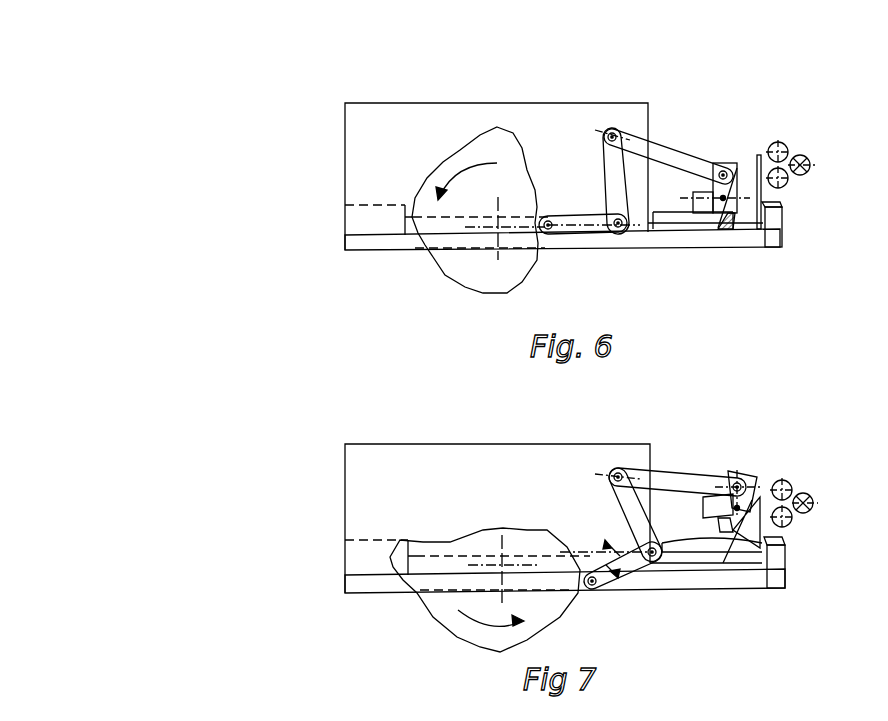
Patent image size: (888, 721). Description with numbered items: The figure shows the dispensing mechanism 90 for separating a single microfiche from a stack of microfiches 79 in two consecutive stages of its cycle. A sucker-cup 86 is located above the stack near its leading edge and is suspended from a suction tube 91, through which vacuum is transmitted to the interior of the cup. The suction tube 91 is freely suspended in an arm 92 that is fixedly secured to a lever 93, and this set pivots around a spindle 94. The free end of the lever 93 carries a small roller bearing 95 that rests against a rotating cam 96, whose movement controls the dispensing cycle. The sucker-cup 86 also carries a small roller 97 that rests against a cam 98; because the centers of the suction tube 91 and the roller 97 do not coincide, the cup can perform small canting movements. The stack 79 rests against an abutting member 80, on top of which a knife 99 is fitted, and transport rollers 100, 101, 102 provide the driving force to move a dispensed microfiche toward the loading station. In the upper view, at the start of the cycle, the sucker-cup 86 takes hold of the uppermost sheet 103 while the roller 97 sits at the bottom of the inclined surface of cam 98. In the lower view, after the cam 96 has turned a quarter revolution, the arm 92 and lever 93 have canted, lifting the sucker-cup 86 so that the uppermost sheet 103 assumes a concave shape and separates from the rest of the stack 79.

In FIG. 6, the stack of microfiches 79 is at (703, 233).
In FIG. 7, the stack of microfiches 79 is at (688, 572).
In FIG. 6, the abutting member 80 is at (770, 220).
In FIG. 7, the abutting member 80 is at (780, 560).
In FIG. 6, the sucker-cup 86 is at (728, 225).
In FIG. 7, the sucker-cup 86 is at (717, 527).
In FIG. 6, the dispensing mechanism 90 is at (695, 80).
In FIG. 7, the dispensing mechanism 90 is at (705, 430).
In FIG. 6, the suction tube 91 is at (722, 165).
In FIG. 7, the suction tube 91 is at (747, 480).
In FIG. 6, the arm 92 is at (655, 148).
In FIG. 7, the arm 92 is at (685, 483).
In FIG. 6, the lever 93 is at (606, 180).
In FIG. 7, the lever 93 is at (621, 514).
In FIG. 6, the spindle 94 is at (618, 132).
In FIG. 7, the spindle 94 is at (627, 465).
In FIG. 6, the roller bearing 95 is at (548, 210).
In FIG. 7, the roller bearing 95 is at (588, 587).
In FIG. 6, the rotating cam 96 is at (455, 168).
In FIG. 7, the rotating cam 96 is at (458, 555).
In FIG. 6, the roller 97 is at (712, 190).
In FIG. 7, the roller 97 is at (745, 500).
In FIG. 6, the cam 98 is at (737, 183).
In FIG. 7, the cam 98 is at (745, 558).
In FIG. 6, the knife 99 is at (778, 198).
In FIG. 7, the knife 99 is at (787, 537).
In FIG. 6, the transport roller 100 is at (788, 145).
In FIG. 7, the transport roller 100 is at (790, 487).
In FIG. 6, the transport roller 101 is at (812, 165).
In FIG. 7, the transport roller 101 is at (813, 502).
In FIG. 6, the transport roller 102 is at (807, 182).
In FIG. 7, the transport roller 102 is at (795, 527).
In FIG. 6, the uppermost sheet 103 is at (658, 200).
In FIG. 7, the uppermost sheet 103 is at (693, 530).